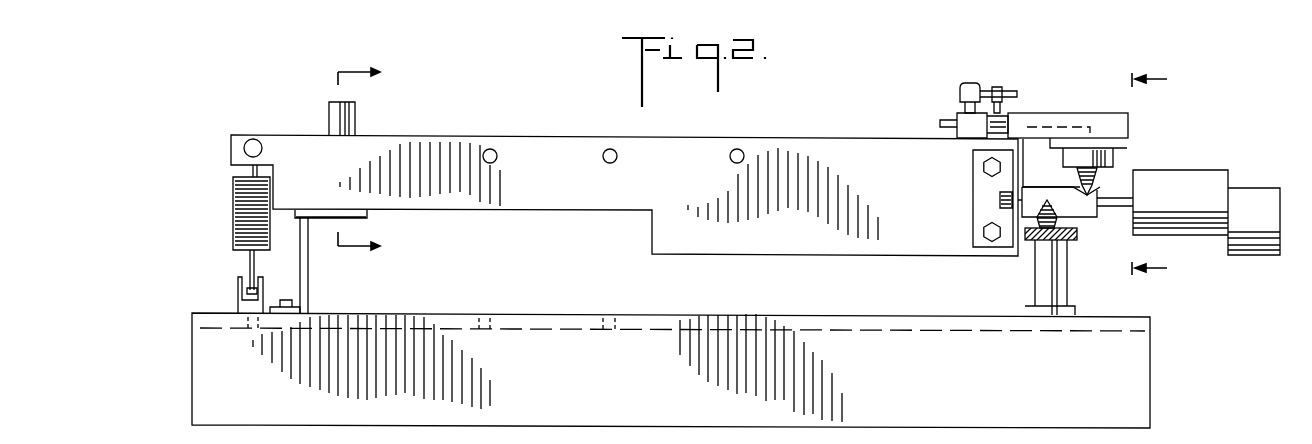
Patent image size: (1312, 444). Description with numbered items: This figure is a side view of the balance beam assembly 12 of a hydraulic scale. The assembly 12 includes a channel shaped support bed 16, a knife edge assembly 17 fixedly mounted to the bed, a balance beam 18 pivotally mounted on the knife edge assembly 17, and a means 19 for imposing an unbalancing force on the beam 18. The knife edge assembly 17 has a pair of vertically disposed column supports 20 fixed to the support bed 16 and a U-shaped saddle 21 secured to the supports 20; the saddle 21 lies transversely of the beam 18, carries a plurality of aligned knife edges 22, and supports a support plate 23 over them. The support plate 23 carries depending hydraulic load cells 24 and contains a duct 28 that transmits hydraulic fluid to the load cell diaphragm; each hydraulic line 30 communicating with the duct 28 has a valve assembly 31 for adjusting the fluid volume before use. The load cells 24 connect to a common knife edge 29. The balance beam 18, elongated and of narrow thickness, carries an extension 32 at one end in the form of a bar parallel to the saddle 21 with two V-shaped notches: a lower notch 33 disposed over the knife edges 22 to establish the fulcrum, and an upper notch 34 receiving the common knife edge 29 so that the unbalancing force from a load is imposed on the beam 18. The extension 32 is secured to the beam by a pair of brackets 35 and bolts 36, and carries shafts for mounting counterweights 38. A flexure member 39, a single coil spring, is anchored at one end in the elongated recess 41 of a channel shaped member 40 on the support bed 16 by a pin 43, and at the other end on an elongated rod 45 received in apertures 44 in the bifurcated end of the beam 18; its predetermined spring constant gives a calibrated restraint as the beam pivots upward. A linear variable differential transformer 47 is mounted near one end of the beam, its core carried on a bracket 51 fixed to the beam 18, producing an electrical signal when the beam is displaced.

The balance beam assembly 12 is at (160, 291).
The support bed 16 is at (1150, 391).
The knife edge assembly 17 is at (980, 282).
The balance beam 18 is at (678, 135).
The means for imposing an unbalancing force 19 is at (1068, 90).
The column supports 20 is at (1062, 288).
The U-shaped saddle 21 is at (1034, 166).
The knife edges 22 is at (1040, 240).
The support plate 23 is at (1128, 120).
The hydraulic load cells 24 is at (1125, 158).
The duct 28 is at (1027, 120).
The common knife edge 29 is at (1077, 173).
The hydraulic lines 30 is at (942, 122).
The valve assembly 31 is at (995, 87).
The extension 32 is at (1097, 217).
The V-shaped notch 33 is at (1059, 211).
The second V-shaped notch 34 is at (1100, 191).
The brackets 35 is at (1000, 197).
The bolts 36 is at (983, 164).
The counterweights 38 is at (1250, 195).
The flexure member 39 is at (233, 185).
The channel shaped member 40 is at (238, 287).
The elongated recess 41 is at (259, 298).
The pin 43 is at (248, 280).
The apertures 44 is at (603, 160).
The elongated rod 45 is at (244, 148).
The linear variable differential transformer 47 is at (322, 100).
The bracket 51 is at (368, 215).